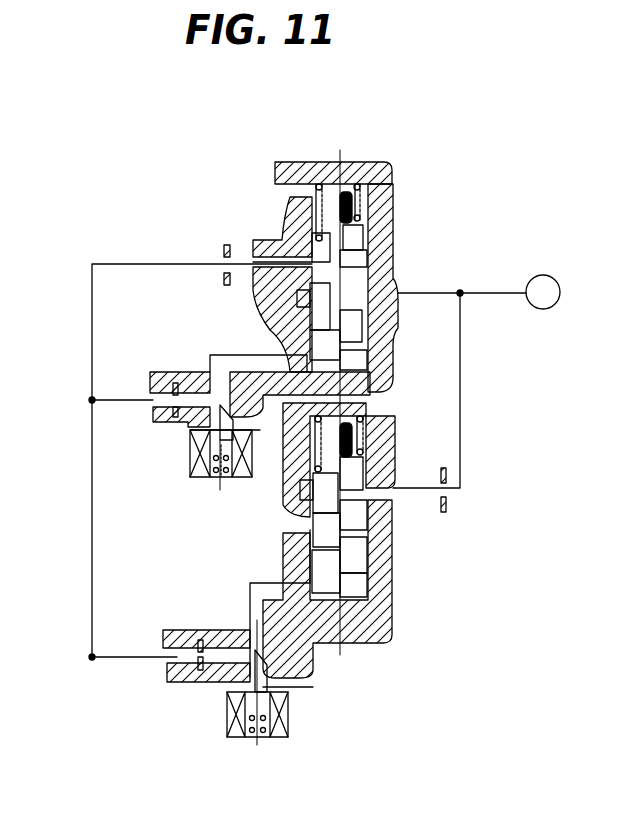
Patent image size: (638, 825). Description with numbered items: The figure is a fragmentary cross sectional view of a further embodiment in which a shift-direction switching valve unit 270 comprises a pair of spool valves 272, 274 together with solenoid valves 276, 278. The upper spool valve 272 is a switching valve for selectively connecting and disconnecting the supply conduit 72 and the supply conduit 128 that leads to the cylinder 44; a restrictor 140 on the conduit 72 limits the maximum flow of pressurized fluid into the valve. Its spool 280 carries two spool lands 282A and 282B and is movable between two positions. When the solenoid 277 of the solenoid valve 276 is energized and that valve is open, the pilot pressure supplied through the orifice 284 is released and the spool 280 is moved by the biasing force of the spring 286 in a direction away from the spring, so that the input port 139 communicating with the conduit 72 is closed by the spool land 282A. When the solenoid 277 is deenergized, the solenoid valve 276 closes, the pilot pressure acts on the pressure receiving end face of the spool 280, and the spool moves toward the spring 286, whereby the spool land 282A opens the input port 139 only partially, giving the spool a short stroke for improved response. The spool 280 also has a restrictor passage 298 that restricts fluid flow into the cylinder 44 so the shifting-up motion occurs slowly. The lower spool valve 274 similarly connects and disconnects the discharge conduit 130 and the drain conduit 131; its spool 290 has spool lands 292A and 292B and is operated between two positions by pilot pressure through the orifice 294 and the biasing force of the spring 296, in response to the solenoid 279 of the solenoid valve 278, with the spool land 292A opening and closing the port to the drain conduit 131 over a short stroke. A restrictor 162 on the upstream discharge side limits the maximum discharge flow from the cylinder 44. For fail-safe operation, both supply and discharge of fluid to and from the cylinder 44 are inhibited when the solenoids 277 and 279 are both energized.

The shift-direction switching valve unit 270 is at (412, 147).
The spool valve 272 is at (402, 236).
The spool valve 274 is at (400, 482).
The solenoid valve 276 is at (212, 484).
The solenoid 277 is at (243, 475).
The solenoid valve 278 is at (295, 709).
The solenoid 279 is at (278, 730).
The spool 280 is at (356, 183).
The spool land 282A is at (308, 242).
The spool land 282B is at (307, 347).
The orifice 284 is at (193, 383).
The spring 286 is at (317, 183).
The spool 290 is at (386, 410).
The spool land 292A is at (393, 442).
The spool land 292B is at (392, 560).
The orifice 294 is at (196, 657).
The spring 296 is at (396, 390).
The restrictor passage 298 is at (375, 252).
The supply conduit 128 is at (440, 292).
The discharge conduit 130 is at (460, 472).
The drain conduit 131 is at (295, 528).
The input port 139 is at (320, 250).
The restrictor 140 is at (223, 251).
The restrictor 162 is at (447, 503).
The cylinder 44 is at (540, 282).
The conduit 72 is at (92, 570).